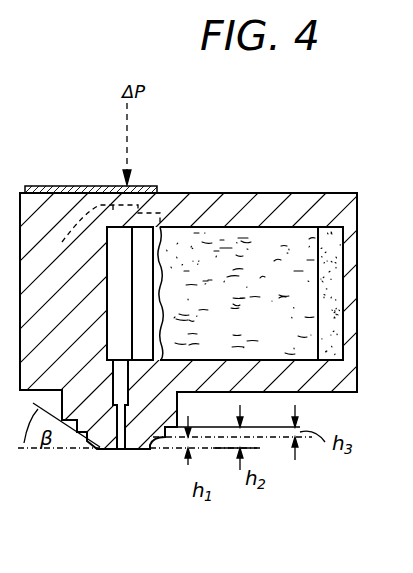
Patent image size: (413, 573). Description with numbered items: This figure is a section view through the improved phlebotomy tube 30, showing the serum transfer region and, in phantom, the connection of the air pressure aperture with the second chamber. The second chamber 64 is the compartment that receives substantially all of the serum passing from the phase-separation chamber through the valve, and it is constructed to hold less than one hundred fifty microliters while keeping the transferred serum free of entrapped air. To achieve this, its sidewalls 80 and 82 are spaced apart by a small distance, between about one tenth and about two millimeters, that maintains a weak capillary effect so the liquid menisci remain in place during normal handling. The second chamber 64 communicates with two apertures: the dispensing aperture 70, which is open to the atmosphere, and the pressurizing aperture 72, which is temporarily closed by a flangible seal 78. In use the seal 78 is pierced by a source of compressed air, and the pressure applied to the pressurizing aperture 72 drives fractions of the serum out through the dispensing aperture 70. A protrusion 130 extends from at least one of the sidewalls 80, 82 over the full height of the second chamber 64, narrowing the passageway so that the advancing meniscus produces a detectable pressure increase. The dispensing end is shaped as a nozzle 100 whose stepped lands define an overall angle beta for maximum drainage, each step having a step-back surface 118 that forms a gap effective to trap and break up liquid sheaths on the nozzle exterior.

The phlebotomy tube 30 is at (259, 153).
The second chamber 64 is at (283, 340).
The dispensing aperture 70 is at (117, 453).
The pressurizing aperture 72 is at (101, 236).
The flangible seal 78 is at (72, 187).
The sidewall of second chamber 80 is at (338, 284).
The sidewall of second chamber 82 is at (329, 193).
The nozzle 100 is at (0, 492).
The step-back surface 118 is at (163, 450).
The protrusion 130 is at (164, 241).